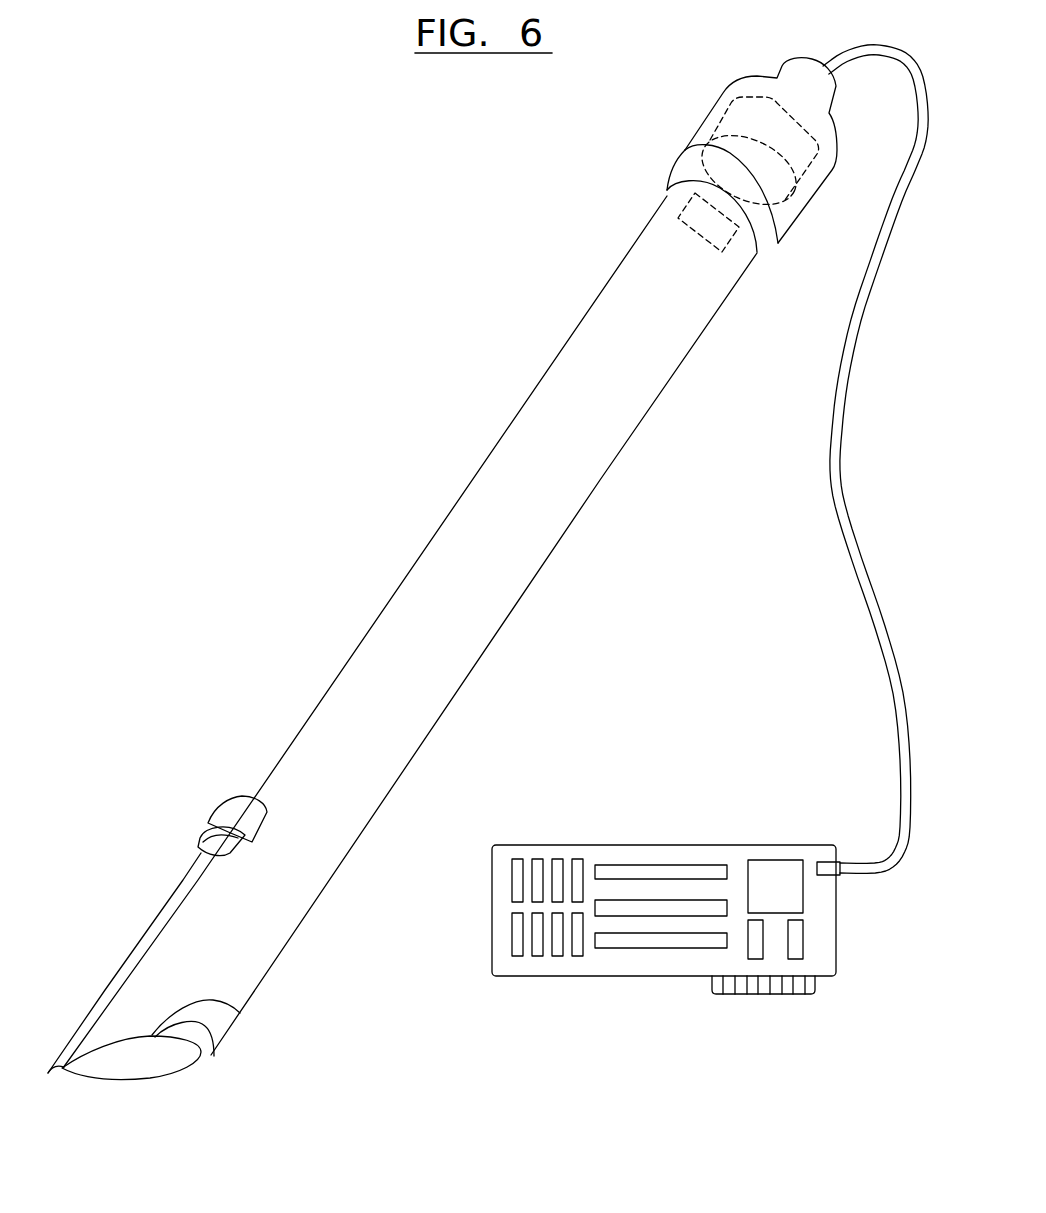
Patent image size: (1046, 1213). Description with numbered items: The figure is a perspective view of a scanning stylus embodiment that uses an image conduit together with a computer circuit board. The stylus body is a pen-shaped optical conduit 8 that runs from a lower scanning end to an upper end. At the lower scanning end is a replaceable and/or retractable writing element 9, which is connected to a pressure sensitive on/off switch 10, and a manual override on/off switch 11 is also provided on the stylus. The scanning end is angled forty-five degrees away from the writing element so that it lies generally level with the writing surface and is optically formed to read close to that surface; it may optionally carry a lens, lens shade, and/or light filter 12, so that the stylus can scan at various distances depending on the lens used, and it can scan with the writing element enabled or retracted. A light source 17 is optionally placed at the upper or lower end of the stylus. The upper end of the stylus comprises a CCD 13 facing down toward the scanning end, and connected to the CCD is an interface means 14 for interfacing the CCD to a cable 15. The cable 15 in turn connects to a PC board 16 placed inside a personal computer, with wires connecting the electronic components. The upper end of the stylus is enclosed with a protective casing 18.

The optical conduit 8 is at (453, 503).
The writing element 9 is at (50, 1078).
The pressure sensitive on/off switch 10 is at (207, 825).
The manual override on/off switch 11 is at (232, 807).
The lens, lens shade, and/or light filter 12 is at (125, 1062).
The CCD 13 is at (702, 215).
The interface means 14 is at (755, 120).
The cable 15 is at (830, 478).
The PC board 16 is at (663, 845).
The light source 17 is at (213, 1058).
The protective casing 18 is at (688, 142).